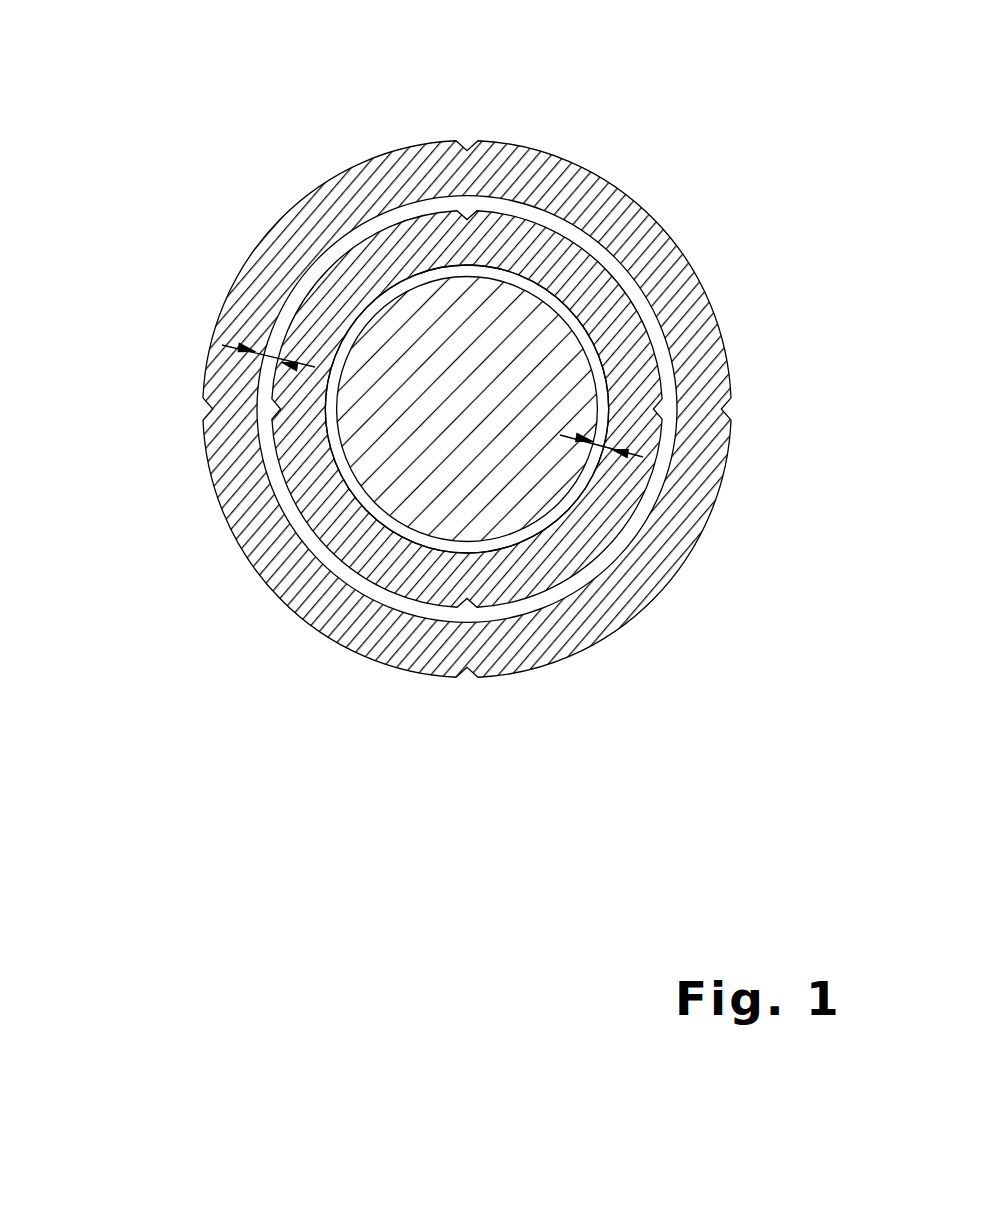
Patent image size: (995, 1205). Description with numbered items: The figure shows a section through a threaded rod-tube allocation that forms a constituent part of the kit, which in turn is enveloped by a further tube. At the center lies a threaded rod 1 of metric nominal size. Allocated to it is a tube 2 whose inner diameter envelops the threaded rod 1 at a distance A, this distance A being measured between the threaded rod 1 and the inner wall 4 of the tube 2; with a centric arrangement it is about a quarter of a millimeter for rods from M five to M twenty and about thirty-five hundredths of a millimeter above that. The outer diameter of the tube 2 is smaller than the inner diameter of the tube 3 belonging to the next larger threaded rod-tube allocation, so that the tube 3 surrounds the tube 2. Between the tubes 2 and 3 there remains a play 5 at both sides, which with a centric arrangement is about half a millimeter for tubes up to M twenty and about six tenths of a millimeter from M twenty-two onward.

The threaded rod 1 is at (507, 318).
The tube 2 is at (367, 558).
The tube of the next larger threaded rod-tube allocation 3 is at (697, 288).
The inner wall 4 is at (340, 481).
The play 5 is at (278, 367).
The distance A is at (610, 447).